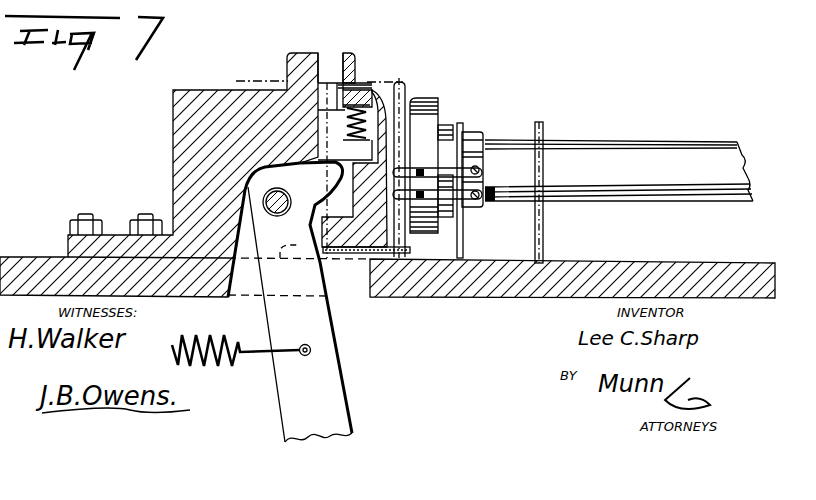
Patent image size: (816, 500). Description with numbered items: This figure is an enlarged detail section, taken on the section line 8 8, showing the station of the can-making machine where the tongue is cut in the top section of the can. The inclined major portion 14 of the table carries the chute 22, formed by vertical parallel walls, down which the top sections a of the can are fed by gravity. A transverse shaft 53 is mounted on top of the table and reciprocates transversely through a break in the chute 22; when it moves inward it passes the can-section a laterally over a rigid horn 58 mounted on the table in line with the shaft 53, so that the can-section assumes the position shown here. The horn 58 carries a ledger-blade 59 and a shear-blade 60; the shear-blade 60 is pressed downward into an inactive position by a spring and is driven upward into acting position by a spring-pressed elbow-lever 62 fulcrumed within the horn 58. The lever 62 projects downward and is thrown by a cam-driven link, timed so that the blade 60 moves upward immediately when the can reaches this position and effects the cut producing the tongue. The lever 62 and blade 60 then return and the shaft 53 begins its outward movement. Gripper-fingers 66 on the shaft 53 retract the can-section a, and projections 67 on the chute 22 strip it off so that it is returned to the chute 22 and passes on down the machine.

The horn 58 is at (196, 107).
The ledger-blade 59 is at (340, 74).
The section line 8 8 is at (411, 86).
The top section of the can a is at (362, 122).
The shear-blade 60 is at (345, 133).
The spring-pressed elbow-lever 62 is at (313, 320).
The inclined major portion of the table 14 is at (512, 297).
The projections 67 is at (438, 108).
The gripper-fingers 66 is at (440, 173).
The transverse shaft 53 is at (619, 170).
The chute 22 is at (464, 238).